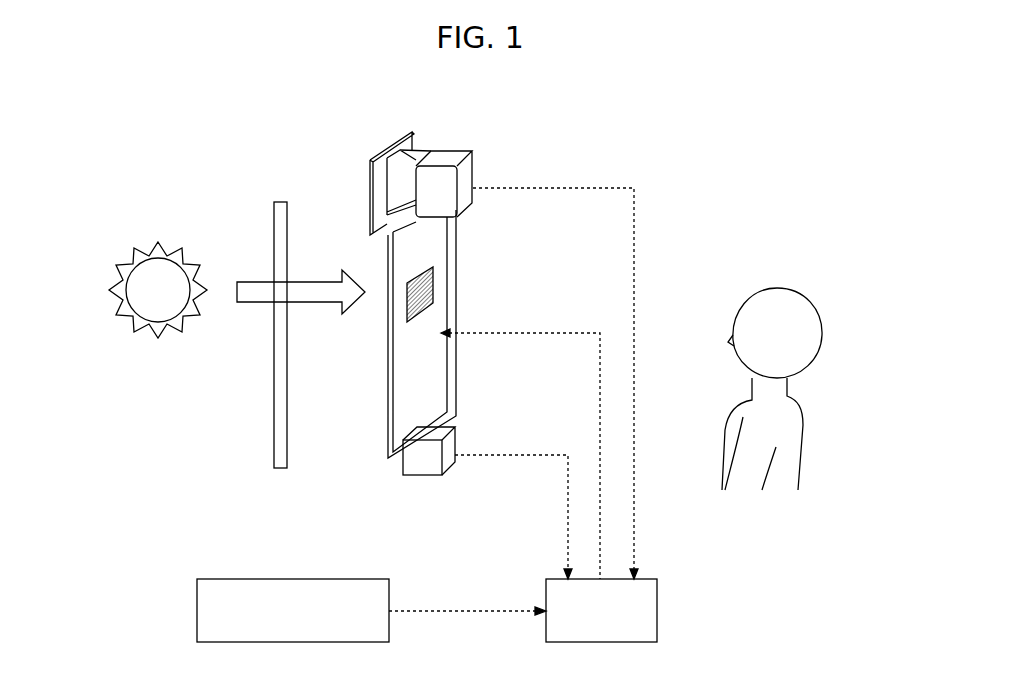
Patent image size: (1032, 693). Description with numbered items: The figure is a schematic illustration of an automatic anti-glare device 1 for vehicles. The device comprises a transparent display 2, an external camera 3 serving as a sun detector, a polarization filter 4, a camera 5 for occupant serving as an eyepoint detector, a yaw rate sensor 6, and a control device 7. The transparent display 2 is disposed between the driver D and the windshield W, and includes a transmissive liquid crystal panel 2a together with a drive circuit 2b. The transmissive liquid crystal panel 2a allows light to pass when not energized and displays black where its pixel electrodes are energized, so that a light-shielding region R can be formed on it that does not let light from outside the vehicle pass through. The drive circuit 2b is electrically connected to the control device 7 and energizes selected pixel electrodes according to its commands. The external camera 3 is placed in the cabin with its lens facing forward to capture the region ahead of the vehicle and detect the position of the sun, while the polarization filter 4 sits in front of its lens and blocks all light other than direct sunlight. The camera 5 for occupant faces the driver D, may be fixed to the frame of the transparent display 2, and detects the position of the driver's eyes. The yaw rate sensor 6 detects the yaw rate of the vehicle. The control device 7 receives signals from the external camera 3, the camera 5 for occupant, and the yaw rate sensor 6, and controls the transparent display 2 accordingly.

The automatic anti-glare device for vehicles 1 is at (606, 146).
The transparent display 2 is at (472, 334).
The transmissive liquid crystal panel 2a is at (440, 362).
The drive circuit 2b is at (456, 393).
The external camera 3 is at (453, 152).
The polarization filter 4 is at (390, 150).
The camera for occupant 5 is at (428, 465).
The yaw rate sensor 6 is at (389, 596).
The control device 7 is at (657, 600).
The light-shielding region R is at (435, 285).
The windshield W is at (283, 200).
The driver D is at (820, 268).